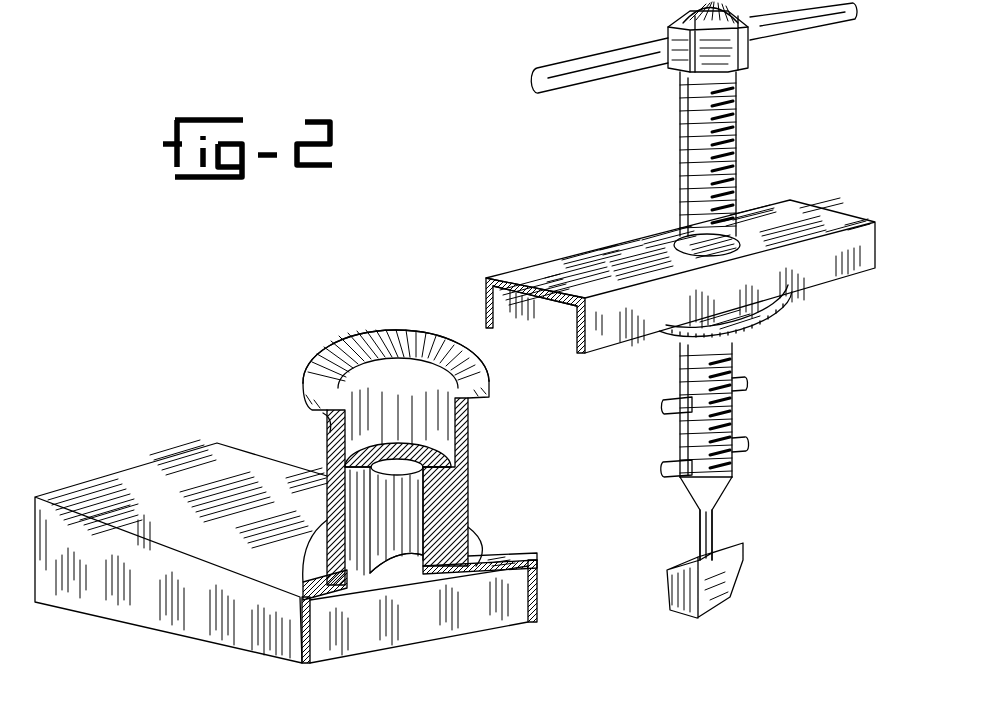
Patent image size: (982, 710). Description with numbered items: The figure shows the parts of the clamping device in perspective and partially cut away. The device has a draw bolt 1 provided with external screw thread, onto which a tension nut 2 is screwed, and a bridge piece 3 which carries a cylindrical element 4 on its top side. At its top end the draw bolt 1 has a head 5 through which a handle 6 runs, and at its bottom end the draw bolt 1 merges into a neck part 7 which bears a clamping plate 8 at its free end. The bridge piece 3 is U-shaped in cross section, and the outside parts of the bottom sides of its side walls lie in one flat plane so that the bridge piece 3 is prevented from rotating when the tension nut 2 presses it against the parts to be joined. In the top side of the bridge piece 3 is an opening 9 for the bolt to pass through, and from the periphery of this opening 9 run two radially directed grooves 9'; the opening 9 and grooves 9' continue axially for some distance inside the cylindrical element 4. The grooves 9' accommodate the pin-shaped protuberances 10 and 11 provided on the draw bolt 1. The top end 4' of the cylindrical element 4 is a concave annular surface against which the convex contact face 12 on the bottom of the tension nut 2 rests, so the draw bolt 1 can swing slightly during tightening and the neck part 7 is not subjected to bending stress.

The draw bolt 1 is at (737, 157).
The tension nut 2 is at (590, 258).
The bridge piece 3 is at (153, 475).
The cylindrical element 4 is at (419, 496).
The top end of the cylindrical element 4' is at (396, 332).
The head 5 is at (680, 16).
The handle 6 is at (810, 30).
The neck part 7 is at (713, 535).
The clamping plate 8 is at (702, 618).
The opening 9 is at (397, 435).
The radially directed grooves 9' is at (390, 587).
The pin-shaped protuberance 10 is at (746, 448).
The pin-shaped protuberance 11 is at (746, 384).
The convex contact face 12 is at (790, 312).